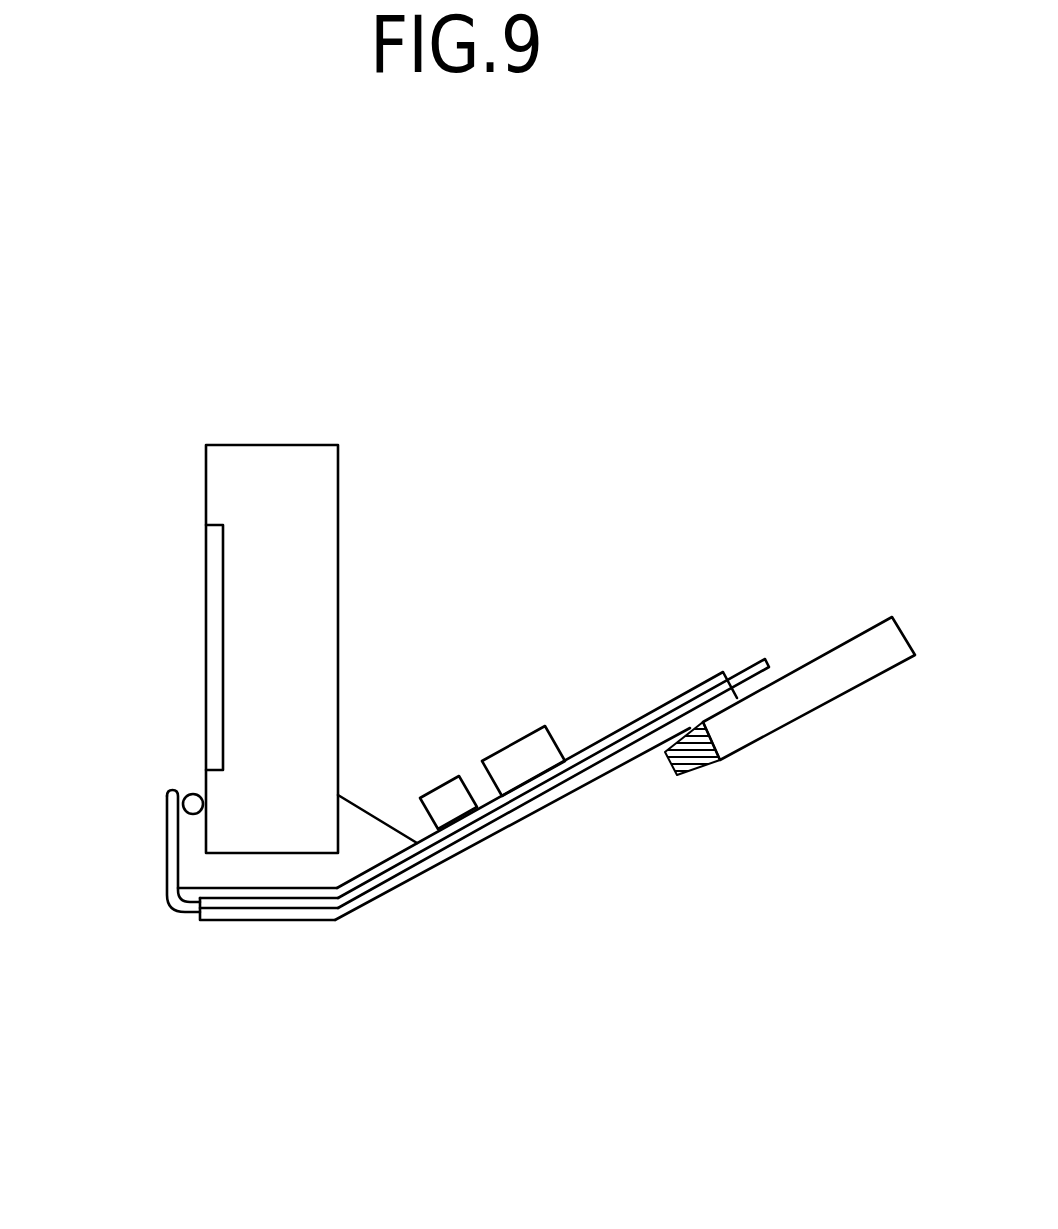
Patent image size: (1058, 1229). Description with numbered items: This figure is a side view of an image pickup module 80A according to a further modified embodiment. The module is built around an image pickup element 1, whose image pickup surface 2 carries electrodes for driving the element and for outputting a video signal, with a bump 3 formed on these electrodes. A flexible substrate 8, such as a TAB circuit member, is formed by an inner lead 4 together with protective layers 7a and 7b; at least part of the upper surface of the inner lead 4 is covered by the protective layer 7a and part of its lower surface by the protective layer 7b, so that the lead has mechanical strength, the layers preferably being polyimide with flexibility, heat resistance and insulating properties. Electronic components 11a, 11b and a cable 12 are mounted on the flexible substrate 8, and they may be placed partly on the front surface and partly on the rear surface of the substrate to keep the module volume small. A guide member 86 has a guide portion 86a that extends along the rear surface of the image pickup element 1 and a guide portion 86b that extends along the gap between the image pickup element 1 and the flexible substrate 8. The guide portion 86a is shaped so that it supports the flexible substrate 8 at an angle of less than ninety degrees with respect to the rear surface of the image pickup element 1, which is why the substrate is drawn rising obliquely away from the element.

The display device 80A is at (612, 373).
The image pickup element 1 is at (233, 470).
The image pickup surface 2 is at (205, 593).
The bump 3 is at (196, 792).
The inner lead 4 is at (166, 865).
The protective layer 7a is at (597, 742).
The protective layer 7b is at (621, 762).
The flexible substrate 8 is at (755, 643).
The electronic component 11a is at (440, 777).
The electronic component 11b is at (515, 743).
The cable 12 is at (810, 714).
The guide member 86 is at (297, 944).
The guide portion 86a is at (363, 832).
The guide portion 86b is at (269, 945).